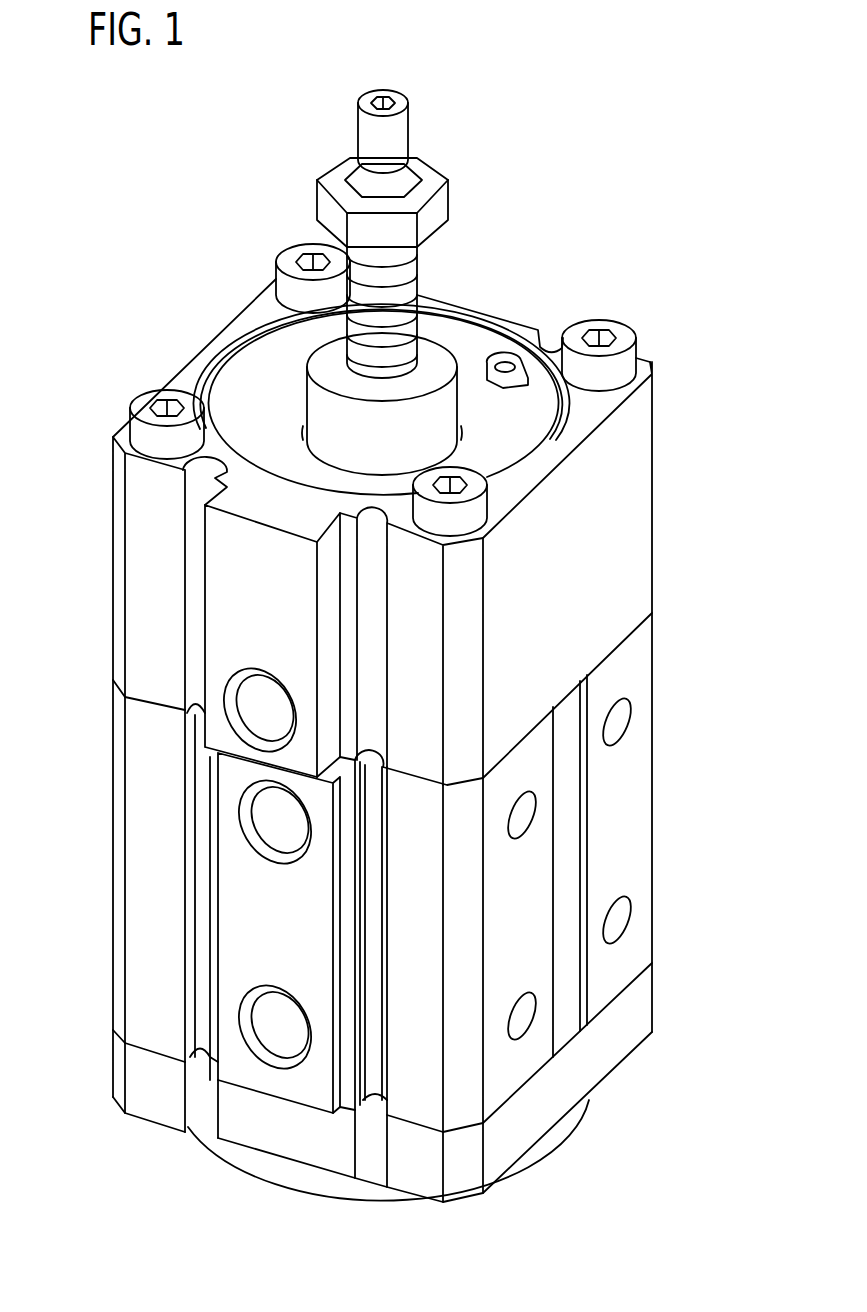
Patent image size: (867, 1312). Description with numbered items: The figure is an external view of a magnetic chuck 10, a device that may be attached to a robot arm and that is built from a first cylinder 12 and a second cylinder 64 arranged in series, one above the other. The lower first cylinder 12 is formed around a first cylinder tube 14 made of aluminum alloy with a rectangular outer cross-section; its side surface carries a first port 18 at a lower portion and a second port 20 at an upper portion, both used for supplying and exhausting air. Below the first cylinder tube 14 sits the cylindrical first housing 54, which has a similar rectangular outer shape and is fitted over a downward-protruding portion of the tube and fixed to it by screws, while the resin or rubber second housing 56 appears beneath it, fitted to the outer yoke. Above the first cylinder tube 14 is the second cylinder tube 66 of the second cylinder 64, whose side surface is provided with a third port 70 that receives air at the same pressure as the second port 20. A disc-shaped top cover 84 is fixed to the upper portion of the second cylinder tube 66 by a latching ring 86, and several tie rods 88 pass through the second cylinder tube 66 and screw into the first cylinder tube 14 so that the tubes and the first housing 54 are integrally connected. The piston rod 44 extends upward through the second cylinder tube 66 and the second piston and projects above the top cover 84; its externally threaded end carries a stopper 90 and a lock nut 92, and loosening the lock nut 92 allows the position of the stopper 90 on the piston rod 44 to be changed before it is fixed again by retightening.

The magnetic chuck 10 is at (115, 126).
The first cylinder 12 is at (107, 830).
The first cylinder tube 14 is at (633, 807).
The first port 18 is at (270, 1010).
The second port 20 is at (275, 835).
The piston rod 44 is at (418, 281).
The first housing 54 is at (633, 997).
The second housing 56 is at (555, 1143).
The second cylinder 64 is at (107, 563).
The second cylinder tube 66 is at (638, 488).
The third port 70 is at (249, 697).
The top cover 84 is at (252, 397).
The latching ring 86 is at (502, 359).
The tie rods 88 is at (603, 320).
The stopper 90 is at (440, 207).
The lock nut 92 is at (412, 158).